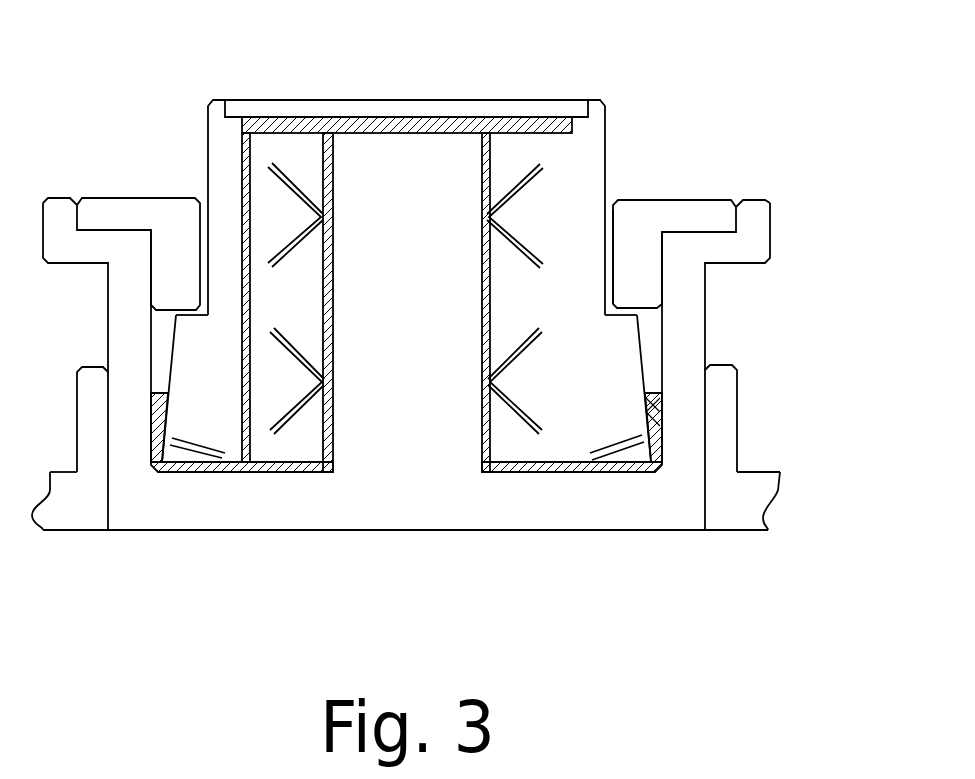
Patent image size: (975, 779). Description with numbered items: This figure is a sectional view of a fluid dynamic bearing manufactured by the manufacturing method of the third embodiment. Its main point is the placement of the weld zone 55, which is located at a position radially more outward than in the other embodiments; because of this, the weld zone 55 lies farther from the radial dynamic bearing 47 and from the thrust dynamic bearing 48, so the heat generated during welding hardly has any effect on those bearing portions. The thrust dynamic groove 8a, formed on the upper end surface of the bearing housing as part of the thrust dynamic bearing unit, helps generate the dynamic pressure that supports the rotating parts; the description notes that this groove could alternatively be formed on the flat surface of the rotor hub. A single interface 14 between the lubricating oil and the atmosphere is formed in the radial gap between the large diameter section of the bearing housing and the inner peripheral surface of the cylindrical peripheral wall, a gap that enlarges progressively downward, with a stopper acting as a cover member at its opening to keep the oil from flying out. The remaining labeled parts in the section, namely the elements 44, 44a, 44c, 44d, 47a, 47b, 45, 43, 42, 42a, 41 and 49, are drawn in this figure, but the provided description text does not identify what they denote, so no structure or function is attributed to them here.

The housing 44 is at (172, 167).
The bottom wall of housing 44a is at (625, 470).
The outer side wall of housing 44c is at (622, 313).
The lower wall portion of housing 44d is at (648, 405).
The radial dynamic bearing 47 is at (485, 380).
The contact portion 47a is at (318, 360).
The contact portion 47b is at (308, 190).
The weld zone 55 is at (740, 200).
The engaging piece 45 is at (637, 283).
The interface 14 is at (640, 400).
The thrust dynamic groove 8a is at (198, 445).
The side wall 43 is at (142, 365).
The base 42 is at (240, 497).
The bottom plate 42a is at (530, 458).
The center wall 41 is at (373, 332).
The thrust dynamic bearing 48 is at (635, 470).
The base assembly 49 is at (337, 580).